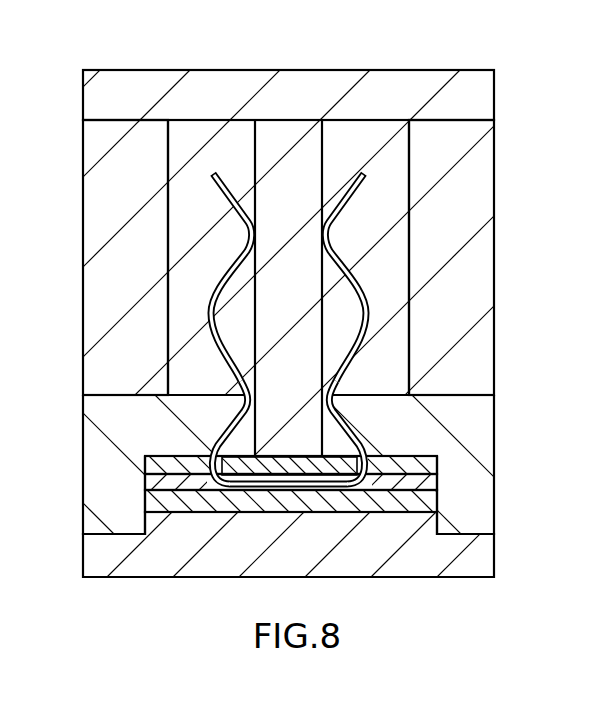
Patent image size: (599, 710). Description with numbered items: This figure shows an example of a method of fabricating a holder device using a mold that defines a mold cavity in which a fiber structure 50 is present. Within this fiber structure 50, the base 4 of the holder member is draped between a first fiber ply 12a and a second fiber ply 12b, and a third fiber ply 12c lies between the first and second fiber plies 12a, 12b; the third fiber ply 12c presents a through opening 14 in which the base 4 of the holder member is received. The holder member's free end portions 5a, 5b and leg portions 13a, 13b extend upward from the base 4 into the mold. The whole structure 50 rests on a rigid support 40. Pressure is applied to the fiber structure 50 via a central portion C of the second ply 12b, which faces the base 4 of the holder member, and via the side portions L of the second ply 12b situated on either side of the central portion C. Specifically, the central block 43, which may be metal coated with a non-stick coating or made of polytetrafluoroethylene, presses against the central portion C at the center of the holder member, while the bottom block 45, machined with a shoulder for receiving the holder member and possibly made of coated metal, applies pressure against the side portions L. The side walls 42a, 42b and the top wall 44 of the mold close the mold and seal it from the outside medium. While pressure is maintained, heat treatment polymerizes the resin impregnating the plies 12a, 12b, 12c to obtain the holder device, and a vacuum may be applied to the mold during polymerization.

The base of the holder member 4 is at (322, 489).
The first free end portion of spring clip 5a is at (226, 198).
The second free end portion of spring clip 5b is at (343, 200).
The first fiber ply 12a is at (430, 500).
The second fiber ply 12b is at (434, 466).
The third fiber ply 12c is at (433, 484).
The first leg portion of spring clip 13a is at (213, 455).
The second leg portion of spring clip 13b is at (362, 462).
The through opening 14 is at (380, 479).
The rigid support 40 is at (217, 578).
The side wall 42a is at (102, 297).
The side wall 42b is at (474, 297).
The central block 43 is at (310, 156).
The top wall 44 is at (218, 83).
The bottom block 45 is at (100, 468).
The fiber structure 50 is at (440, 514).
The central portion C is at (289, 453).
The side portions L is at (164, 452).